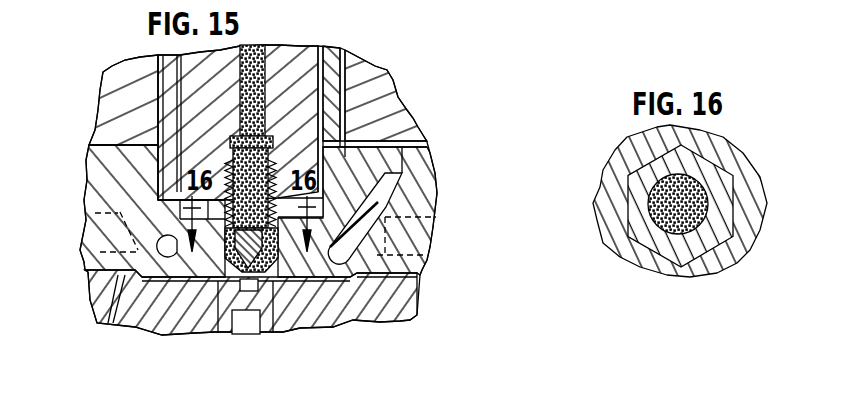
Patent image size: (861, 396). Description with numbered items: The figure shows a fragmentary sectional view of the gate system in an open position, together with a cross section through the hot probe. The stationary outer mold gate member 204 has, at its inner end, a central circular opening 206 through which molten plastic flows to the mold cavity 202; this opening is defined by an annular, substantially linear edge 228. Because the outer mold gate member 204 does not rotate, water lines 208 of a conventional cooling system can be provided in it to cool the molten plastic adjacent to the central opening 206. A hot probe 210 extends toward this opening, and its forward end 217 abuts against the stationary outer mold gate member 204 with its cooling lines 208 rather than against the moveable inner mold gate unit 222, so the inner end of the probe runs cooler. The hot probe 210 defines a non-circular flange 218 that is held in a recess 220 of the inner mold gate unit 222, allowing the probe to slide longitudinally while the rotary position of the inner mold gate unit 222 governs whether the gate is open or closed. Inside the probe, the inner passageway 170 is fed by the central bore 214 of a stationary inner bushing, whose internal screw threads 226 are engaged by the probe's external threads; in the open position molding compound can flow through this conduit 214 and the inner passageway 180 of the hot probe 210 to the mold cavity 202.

In FIG. 15, the central bore 214 is at (258, 78).
In FIG. 15, the hot probe 210 is at (382, 76).
In FIG. 15, the inner mold gate unit 222 is at (170, 88).
In FIG. 16, the inner mold gate unit 222 is at (625, 157).
In FIG. 15, the internal screw threads 226 is at (180, 283).
In FIG. 15, the inner passageway 180 is at (340, 141).
In FIG. 15, the non-circular flange 218 is at (158, 200).
In FIG. 16, the non-circular flange 218 is at (708, 238).
In FIG. 15, the water lines 208 is at (440, 215).
In FIG. 15, the outer mold gate member 204 is at (95, 272).
In FIG. 15, the recess 220 is at (158, 322).
In FIG. 15, the annular, substantially linear edge 228 is at (180, 283).
In FIG. 15, the central circular opening 206 is at (285, 330).
In FIG. 15, the forward end 217 is at (327, 325).
In FIG. 15, the mold cavity 202 is at (387, 276).
In FIG. 16, the inner passageway 170 is at (653, 208).